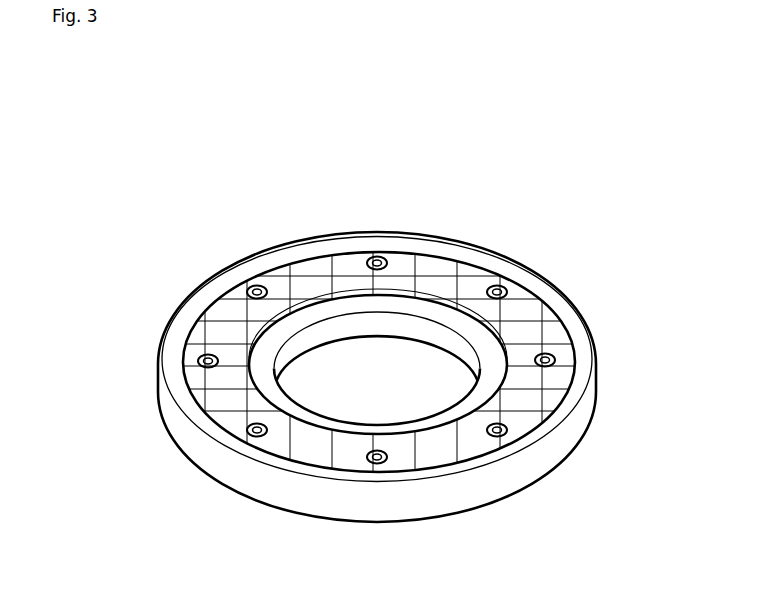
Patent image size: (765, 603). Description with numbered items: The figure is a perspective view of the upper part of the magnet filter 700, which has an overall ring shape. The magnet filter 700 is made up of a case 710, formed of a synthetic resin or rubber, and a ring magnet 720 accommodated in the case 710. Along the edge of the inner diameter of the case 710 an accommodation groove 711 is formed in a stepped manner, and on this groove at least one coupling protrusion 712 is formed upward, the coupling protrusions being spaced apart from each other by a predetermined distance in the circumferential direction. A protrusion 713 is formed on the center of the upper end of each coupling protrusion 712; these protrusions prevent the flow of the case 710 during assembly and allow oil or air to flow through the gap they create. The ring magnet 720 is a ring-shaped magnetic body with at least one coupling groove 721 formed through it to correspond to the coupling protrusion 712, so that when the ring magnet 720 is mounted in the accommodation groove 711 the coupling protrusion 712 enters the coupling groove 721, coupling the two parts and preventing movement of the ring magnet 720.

The magnet filter 700 is at (199, 215).
The case 710 is at (583, 410).
The accommodation groove 711 is at (203, 320).
The coupling protrusion 712 is at (198, 359).
The protrusion 713 is at (500, 286).
The ring magnet 720 is at (470, 277).
The coupling groove 721 is at (372, 256).